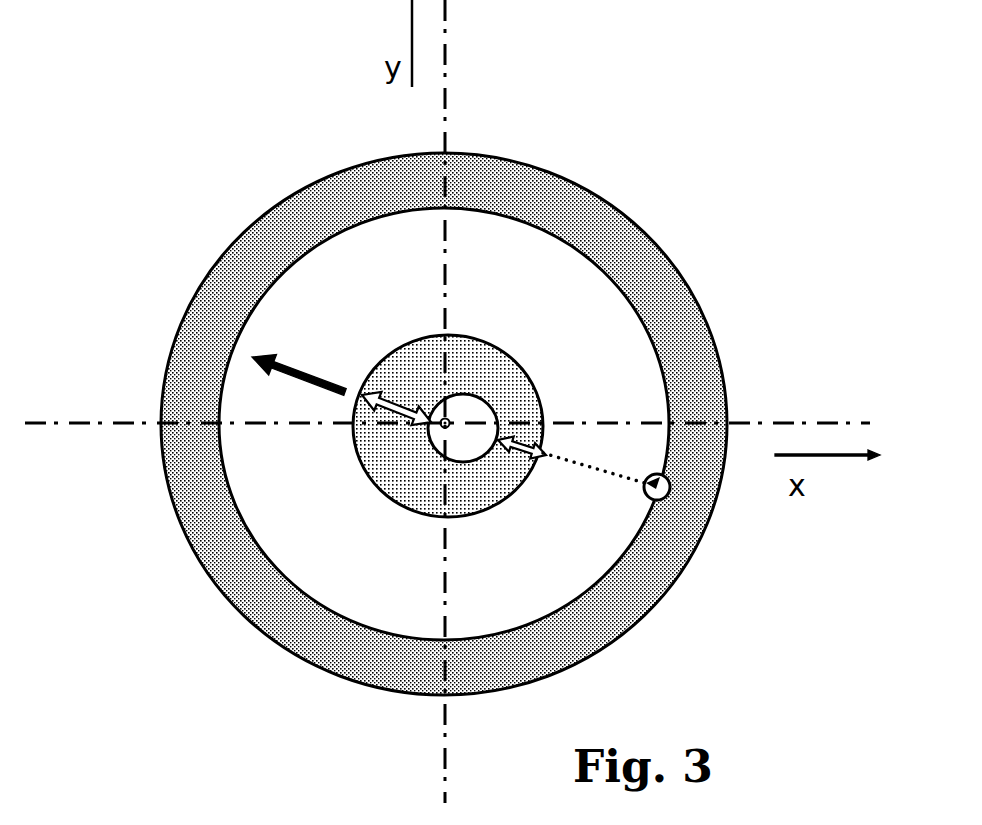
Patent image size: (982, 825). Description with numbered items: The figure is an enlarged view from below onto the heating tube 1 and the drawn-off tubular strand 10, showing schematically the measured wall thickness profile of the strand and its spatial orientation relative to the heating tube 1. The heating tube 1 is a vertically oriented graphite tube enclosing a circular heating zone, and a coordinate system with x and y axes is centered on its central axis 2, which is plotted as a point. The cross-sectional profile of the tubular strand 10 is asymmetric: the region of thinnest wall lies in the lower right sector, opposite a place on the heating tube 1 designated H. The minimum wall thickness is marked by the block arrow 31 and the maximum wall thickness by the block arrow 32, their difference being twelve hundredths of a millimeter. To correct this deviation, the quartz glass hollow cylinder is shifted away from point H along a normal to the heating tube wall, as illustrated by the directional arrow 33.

The heating tube 1 is at (640, 255).
The tubular strand 10 is at (407, 450).
The central axis 2 is at (445, 423).
The block arrow 32 is at (398, 407).
The block arrow 31 is at (517, 443).
The directional arrow 33 is at (322, 377).
The place of the heating tube H is at (670, 495).